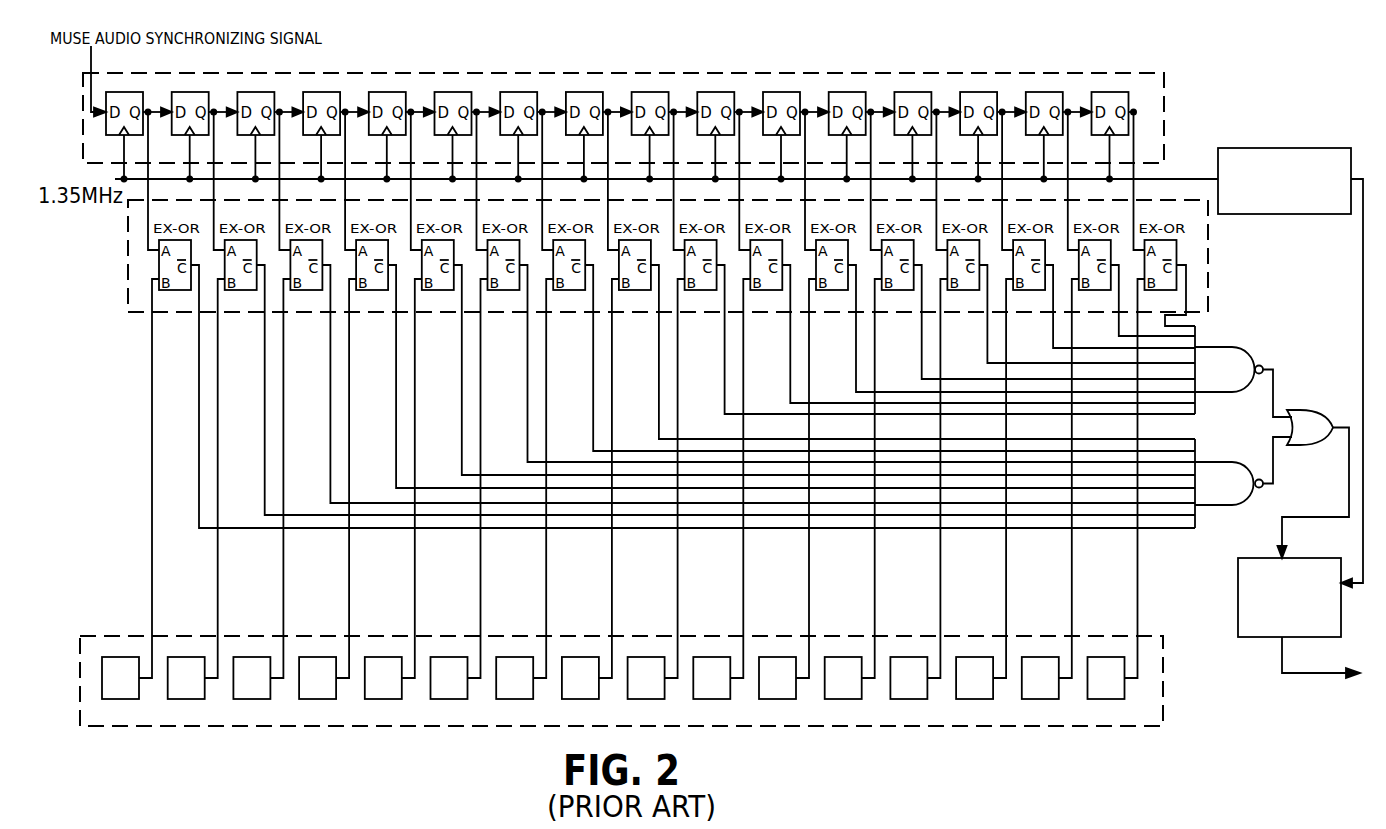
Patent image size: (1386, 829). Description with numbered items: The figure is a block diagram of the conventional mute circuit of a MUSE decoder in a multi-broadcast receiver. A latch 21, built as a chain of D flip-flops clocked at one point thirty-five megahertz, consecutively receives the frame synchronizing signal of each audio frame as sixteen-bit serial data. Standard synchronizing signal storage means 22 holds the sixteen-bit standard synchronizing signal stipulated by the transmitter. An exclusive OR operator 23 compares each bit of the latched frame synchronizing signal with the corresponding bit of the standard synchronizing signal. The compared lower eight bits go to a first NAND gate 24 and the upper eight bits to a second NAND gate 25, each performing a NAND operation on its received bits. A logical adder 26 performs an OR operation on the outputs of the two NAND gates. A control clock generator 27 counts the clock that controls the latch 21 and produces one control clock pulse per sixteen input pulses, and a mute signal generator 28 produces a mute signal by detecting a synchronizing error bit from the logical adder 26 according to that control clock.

The latch 21 is at (1164, 125).
The standard synchronizing signal storage means 22 is at (178, 726).
The exclusive OR operator 23 is at (128, 263).
The first NAND gate 24 is at (1245, 345).
The second NAND gate 25 is at (1232, 464).
The logical adder 26 is at (1305, 410).
The control clock generator 27 is at (1334, 218).
The mute signal generator 28 is at (1238, 607).